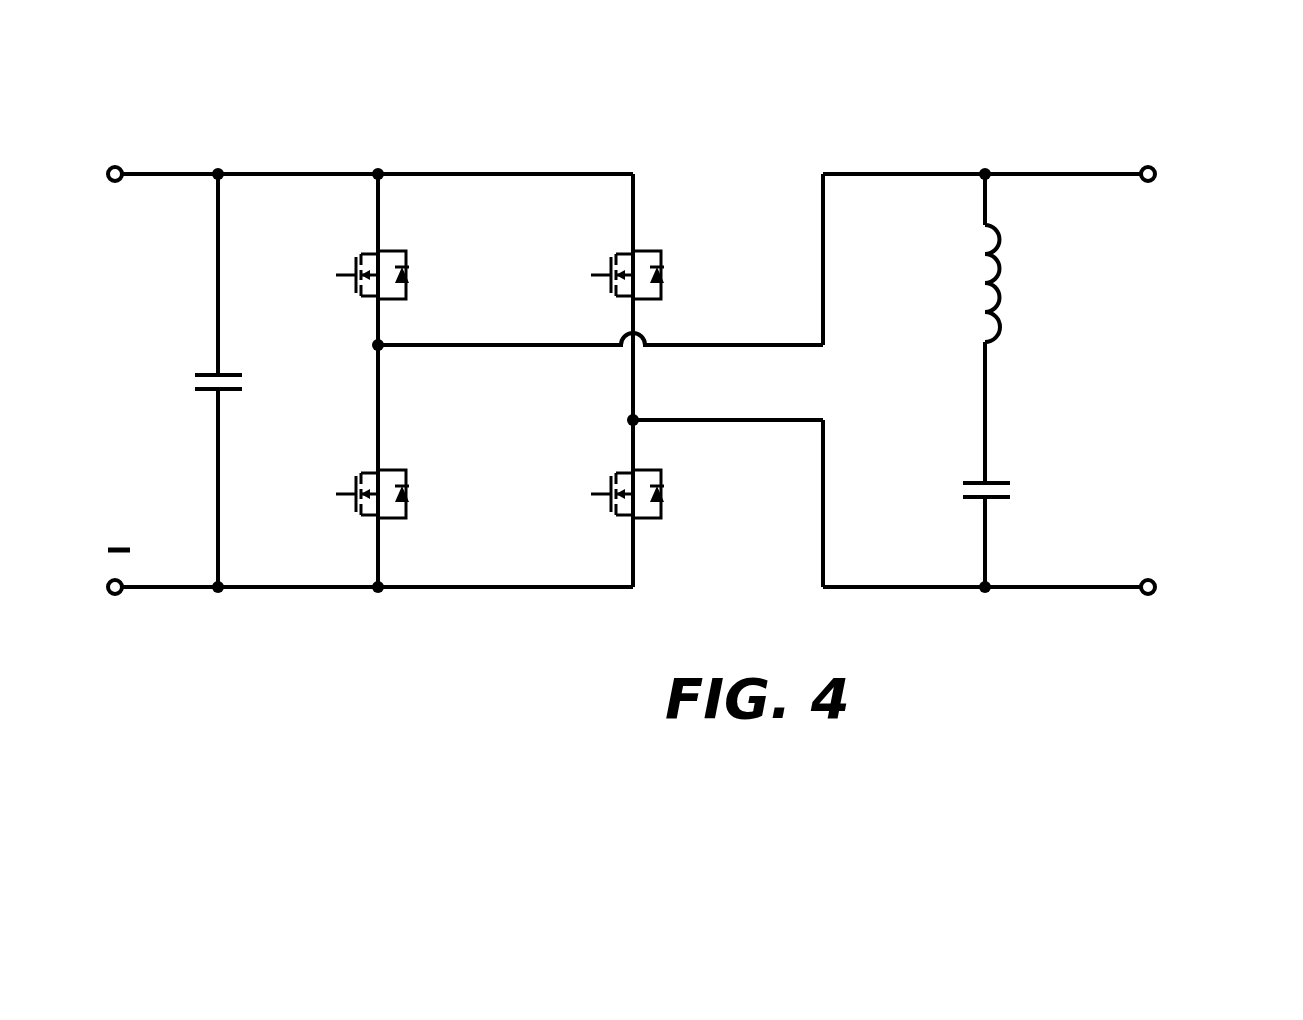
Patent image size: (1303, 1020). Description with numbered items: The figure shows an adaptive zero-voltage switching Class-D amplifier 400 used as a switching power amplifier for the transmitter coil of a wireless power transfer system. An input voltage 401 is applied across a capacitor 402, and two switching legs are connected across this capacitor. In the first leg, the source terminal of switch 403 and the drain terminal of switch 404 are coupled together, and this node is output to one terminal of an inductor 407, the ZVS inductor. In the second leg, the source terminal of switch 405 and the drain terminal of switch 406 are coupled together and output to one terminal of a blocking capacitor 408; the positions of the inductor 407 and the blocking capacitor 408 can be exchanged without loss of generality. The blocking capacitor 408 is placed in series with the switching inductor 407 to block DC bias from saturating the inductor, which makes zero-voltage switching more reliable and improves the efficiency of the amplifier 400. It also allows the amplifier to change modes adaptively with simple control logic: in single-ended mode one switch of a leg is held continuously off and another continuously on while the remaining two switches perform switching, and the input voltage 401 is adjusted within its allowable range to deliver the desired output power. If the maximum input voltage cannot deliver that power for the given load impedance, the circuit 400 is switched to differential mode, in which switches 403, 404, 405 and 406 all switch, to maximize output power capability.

The amplifier 400 is at (495, 82).
The input voltage 401 is at (131, 369).
The capacitor 402 is at (250, 384).
The switch 403 is at (365, 268).
The switch 404 is at (366, 501).
The switch 405 is at (619, 268).
The switch 406 is at (618, 501).
The inductor 407 is at (1031, 283).
The blocking capacitor 408 is at (1083, 508).